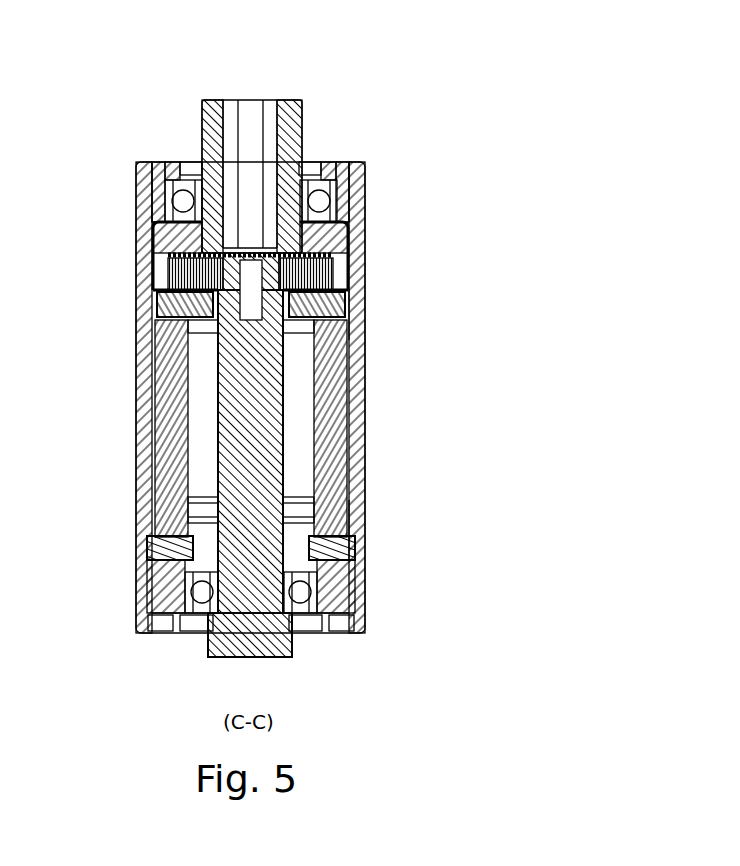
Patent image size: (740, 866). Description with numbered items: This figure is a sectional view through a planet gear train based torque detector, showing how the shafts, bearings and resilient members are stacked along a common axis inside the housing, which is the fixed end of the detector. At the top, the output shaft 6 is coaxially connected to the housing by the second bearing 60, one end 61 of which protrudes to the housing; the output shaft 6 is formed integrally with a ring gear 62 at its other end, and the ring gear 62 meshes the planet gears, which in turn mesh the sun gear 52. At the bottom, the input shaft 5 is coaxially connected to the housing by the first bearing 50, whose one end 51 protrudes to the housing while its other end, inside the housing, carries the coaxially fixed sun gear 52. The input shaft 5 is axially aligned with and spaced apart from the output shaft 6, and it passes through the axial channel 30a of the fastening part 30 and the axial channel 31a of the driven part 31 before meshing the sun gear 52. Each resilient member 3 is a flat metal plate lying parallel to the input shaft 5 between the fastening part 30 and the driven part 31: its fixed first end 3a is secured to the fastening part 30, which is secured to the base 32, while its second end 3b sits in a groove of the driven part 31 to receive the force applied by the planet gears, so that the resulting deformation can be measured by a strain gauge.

The resilient member 3 is at (360, 428).
The first end 3a is at (362, 530).
The second end 3b is at (338, 322).
The input shaft 5 is at (250, 398).
The output shaft 6 is at (213, 140).
The fastening part 30 is at (147, 550).
The axial channel 30a is at (205, 548).
The driven part 31 is at (165, 300).
The axial channel 31a is at (155, 340).
The base 32 is at (160, 588).
The first bearing 50 is at (300, 592).
The end 51 is at (277, 657).
The sun gear 52 is at (352, 283).
The second bearing 60 is at (319, 202).
The end 61 is at (290, 100).
The ring gear 62 is at (350, 262).